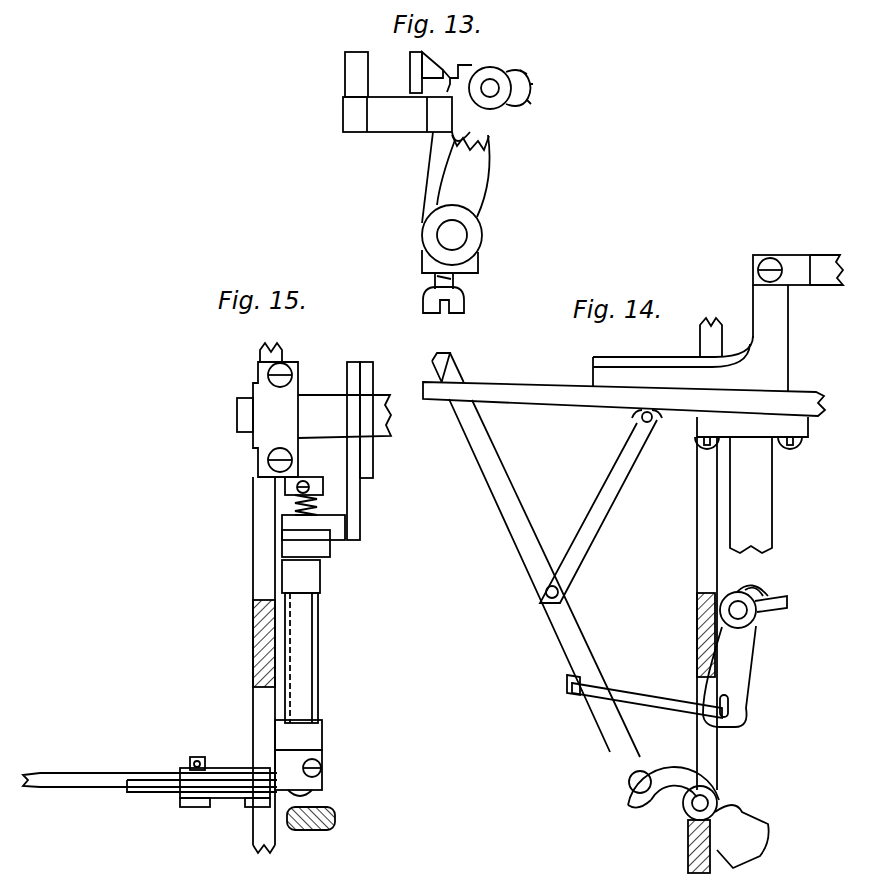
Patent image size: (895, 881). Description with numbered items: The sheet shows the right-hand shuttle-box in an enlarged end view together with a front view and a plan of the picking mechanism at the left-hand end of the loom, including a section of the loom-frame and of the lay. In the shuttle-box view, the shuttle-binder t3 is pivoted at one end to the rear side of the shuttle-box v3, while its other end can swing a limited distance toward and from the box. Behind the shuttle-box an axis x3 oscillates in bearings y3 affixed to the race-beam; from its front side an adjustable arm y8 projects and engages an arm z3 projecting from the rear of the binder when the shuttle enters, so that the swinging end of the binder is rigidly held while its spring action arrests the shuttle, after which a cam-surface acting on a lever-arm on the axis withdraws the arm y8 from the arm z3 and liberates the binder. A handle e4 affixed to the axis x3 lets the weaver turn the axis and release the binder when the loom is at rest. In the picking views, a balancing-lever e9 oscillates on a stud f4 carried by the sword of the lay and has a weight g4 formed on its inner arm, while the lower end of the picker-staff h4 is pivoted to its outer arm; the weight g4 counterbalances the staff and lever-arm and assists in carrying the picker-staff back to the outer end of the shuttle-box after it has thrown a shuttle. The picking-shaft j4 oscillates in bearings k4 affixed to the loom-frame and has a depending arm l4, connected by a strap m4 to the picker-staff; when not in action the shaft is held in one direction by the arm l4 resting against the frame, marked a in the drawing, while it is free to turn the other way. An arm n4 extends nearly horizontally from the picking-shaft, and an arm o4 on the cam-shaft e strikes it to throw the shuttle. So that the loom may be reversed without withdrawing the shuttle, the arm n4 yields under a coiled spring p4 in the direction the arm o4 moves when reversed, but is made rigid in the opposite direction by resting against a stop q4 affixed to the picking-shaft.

In FIG. 13, the shuttle-binder t3 is at (406, 72).
In FIG. 13, the arm z3 is at (436, 72).
In FIG. 13, the adjustable arm y8 is at (462, 62).
In FIG. 13, the axis x3 is at (501, 88).
In FIG. 13, the bearings y3 is at (470, 132).
In FIG. 15, the cam-shaft e is at (344, 416).
In FIG. 15, the arm o4 is at (350, 451).
In FIG. 14, the arm o4 is at (752, 581).
In FIG. 15, the coiled spring p4 is at (311, 496).
In FIG. 15, the arm n4 is at (313, 527).
In FIG. 14, the arm n4 is at (771, 604).
In FIG. 15, the stop q4 is at (306, 543).
In FIG. 15, the frame bar a is at (264, 665).
In FIG. 14, the frame bar a is at (707, 613).
In FIG. 15, the bearings k4 is at (298, 655).
In FIG. 15, the picking-shaft j4 is at (301, 658).
In FIG. 14, the picking-shaft j4 is at (738, 610).
In FIG. 15, the picker-staff h4 is at (150, 771).
In FIG. 14, the picker-staff h4 is at (536, 555).
In FIG. 15, the strap m4 is at (202, 774).
In FIG. 14, the strap m4 is at (644, 696).
In FIG. 15, the balancing-lever e9 is at (225, 779).
In FIG. 14, the balancing-lever e9 is at (673, 775).
In FIG. 14, the shuttle-box v3 is at (673, 361).
In FIG. 14, the handle e4 is at (601, 506).
In FIG. 14, the arm l4 is at (729, 676).
In FIG. 14, the stud f4 is at (692, 804).
In FIG. 14, the weight g4 is at (728, 839).